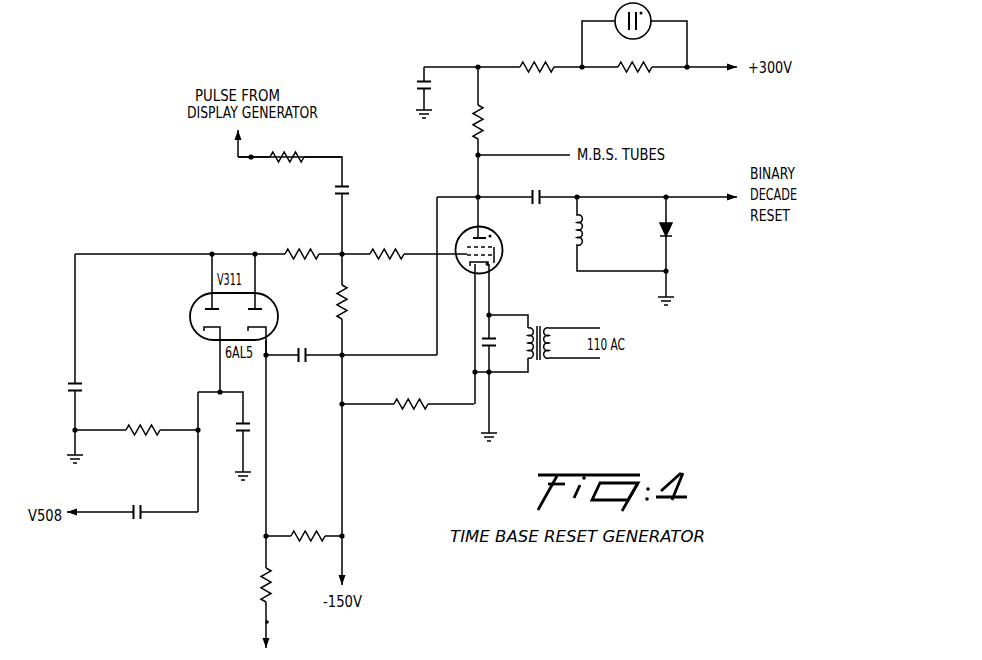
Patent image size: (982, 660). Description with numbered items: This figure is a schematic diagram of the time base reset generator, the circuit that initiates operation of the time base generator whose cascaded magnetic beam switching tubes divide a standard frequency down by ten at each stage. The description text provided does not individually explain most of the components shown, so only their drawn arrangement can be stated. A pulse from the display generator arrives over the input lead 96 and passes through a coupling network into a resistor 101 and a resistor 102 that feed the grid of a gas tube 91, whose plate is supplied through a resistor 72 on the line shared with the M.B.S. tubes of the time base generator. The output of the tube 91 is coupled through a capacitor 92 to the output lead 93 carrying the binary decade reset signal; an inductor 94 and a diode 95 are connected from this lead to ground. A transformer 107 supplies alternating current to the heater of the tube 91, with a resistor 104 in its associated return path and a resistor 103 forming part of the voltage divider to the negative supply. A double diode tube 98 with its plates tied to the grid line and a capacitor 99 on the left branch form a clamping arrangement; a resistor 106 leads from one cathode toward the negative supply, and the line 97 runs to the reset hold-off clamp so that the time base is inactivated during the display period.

The lead to M.B.S. tubes 72 is at (536, 155).
The thyratron tube 91 is at (503, 254).
The coupling capacitor 92 is at (546, 196).
The output lead to binary decade reset 93 is at (707, 196).
The inductor 94 is at (584, 236).
The diode rectifier 95 is at (672, 234).
The input lead from display generator 96 is at (250, 160).
The line 97 is at (98, 514).
The double diode tube 6AL5 98 is at (190, 317).
The capacitor 99 is at (86, 385).
The resistor 101 is at (301, 250).
The resistor 102 is at (393, 258).
The resistor 103 is at (348, 309).
The resistor 104 is at (418, 408).
The resistor 106 is at (265, 623).
The transformer 107 is at (530, 319).